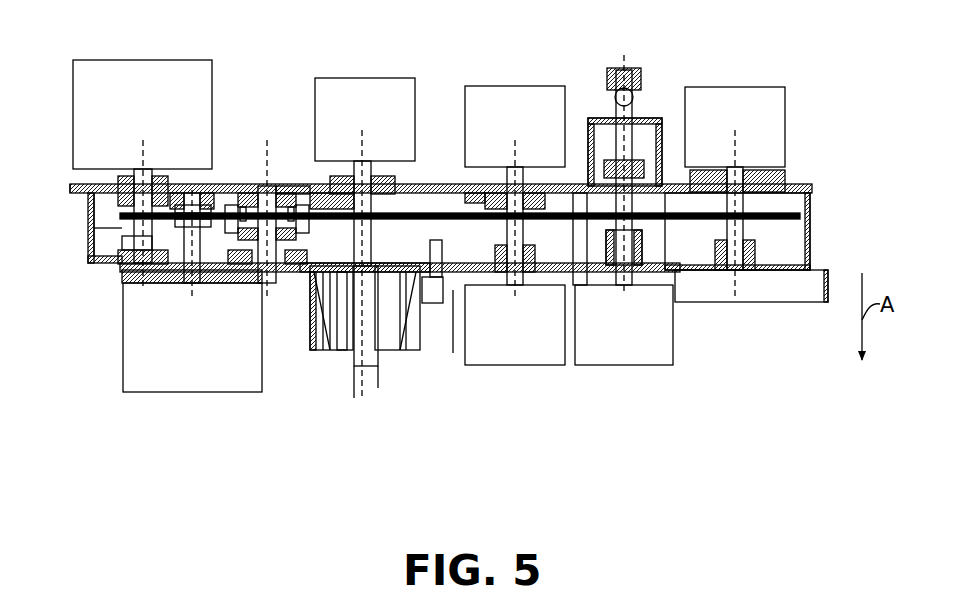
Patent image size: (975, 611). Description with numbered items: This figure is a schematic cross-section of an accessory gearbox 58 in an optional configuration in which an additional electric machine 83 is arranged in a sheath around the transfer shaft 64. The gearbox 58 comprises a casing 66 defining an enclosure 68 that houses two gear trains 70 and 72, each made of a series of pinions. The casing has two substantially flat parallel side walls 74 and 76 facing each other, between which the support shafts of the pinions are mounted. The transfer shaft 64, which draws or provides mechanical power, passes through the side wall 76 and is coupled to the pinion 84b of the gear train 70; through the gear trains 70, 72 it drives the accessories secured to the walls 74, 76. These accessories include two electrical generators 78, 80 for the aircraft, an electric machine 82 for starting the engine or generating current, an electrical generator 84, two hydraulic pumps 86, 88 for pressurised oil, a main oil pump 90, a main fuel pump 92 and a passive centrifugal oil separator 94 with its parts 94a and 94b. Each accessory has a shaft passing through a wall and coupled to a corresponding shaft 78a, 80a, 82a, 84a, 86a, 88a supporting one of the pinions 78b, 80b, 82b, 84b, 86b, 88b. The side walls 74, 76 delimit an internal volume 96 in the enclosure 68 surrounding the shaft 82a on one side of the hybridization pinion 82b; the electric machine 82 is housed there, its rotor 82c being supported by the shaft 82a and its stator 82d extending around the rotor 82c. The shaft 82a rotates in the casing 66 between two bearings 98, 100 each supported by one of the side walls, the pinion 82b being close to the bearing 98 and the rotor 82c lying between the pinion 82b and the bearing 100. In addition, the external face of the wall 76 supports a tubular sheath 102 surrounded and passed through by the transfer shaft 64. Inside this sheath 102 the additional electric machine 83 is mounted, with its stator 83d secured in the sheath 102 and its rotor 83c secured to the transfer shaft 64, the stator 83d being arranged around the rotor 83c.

The accessory gearbox 58 is at (67, 241).
The transfer shaft 64 is at (380, 388).
The casing 66 is at (88, 262).
The enclosure 68 is at (107, 228).
The gear train 70 is at (208, 278).
The gear train 72 is at (576, 290).
The side wall 74 is at (790, 193).
The side wall 76 is at (455, 300).
The electrical generator 78 is at (142, 175).
The shaft 78a is at (140, 216).
The pinion 78b is at (88, 265).
The electrical generator 80 is at (192, 291).
The shaft 80a is at (130, 245).
The pinion 80b is at (215, 185).
The electric machine 82 is at (240, 188).
The shaft 82a is at (245, 258).
The hybridization pinion 82b is at (312, 350).
The rotor 82c is at (233, 243).
The stator 82d is at (352, 188).
The additional electric machine 83 is at (392, 364).
The rotor 83c is at (343, 350).
The stator 83d is at (318, 350).
The electrical generator 84 is at (365, 239).
The shaft 84a is at (382, 192).
The pinion 84b is at (370, 345).
The hydraulic pump 86 is at (515, 193).
The shaft 86a is at (513, 287).
The pinion 86b is at (465, 197).
The hydraulic pump 88 is at (735, 193).
The shaft 88a is at (755, 270).
The pinion 88b is at (775, 222).
The main oil pump 90 is at (515, 325).
The main fuel pump 92 is at (624, 325).
The centrifugal oil separator 94 is at (643, 97).
The valve lower part 94a is at (665, 262).
The valve housing 94b is at (670, 200).
The internal volume 96 is at (318, 192).
The bearing 98 is at (308, 268).
The bearing 100 is at (282, 188).
The tubular sheath 102 is at (312, 338).